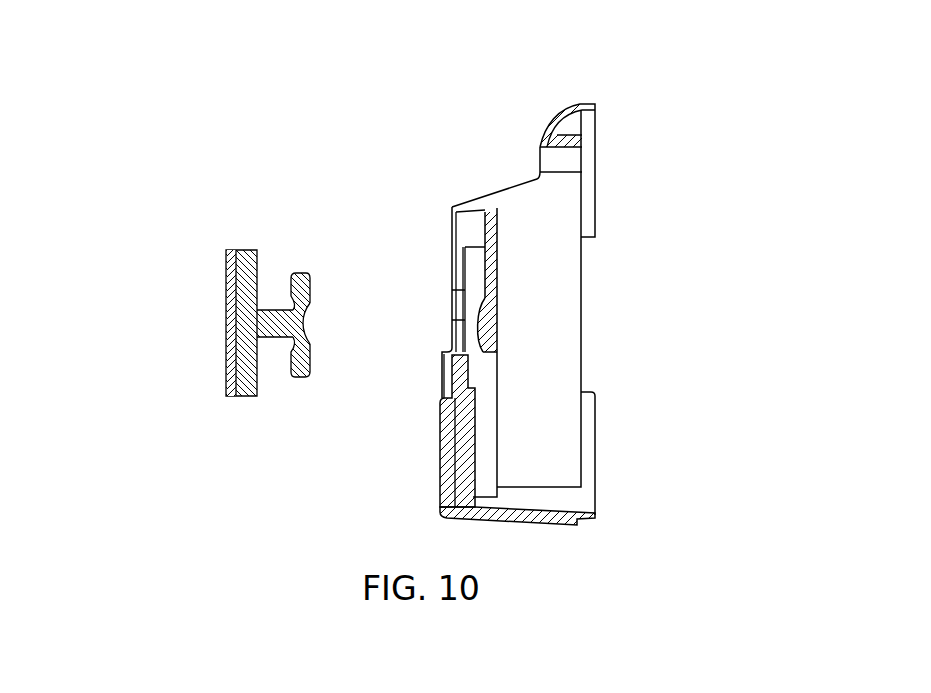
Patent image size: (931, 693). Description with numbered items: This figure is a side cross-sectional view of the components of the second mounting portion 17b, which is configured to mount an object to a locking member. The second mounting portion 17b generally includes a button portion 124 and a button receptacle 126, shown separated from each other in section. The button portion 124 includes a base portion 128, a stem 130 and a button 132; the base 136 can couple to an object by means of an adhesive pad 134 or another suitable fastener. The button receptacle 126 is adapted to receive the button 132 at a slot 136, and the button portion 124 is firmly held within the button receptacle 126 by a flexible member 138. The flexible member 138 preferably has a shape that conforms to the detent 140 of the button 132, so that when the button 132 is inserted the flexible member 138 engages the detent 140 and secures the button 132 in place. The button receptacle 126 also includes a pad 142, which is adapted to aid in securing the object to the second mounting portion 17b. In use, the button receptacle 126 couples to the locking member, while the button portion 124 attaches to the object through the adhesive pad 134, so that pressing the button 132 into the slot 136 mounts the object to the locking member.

The second mounting portion 17b is at (372, 125).
The button portion 124 is at (208, 235).
The button receptacle 126 is at (614, 145).
The base portion 128 is at (250, 398).
The stem 130 is at (271, 310).
The button 132 is at (308, 370).
The adhesive pad 134 is at (228, 358).
The slot 136 is at (468, 323).
The flexible member 138 is at (487, 322).
The detent 140 is at (303, 322).
The pad 142 is at (447, 470).